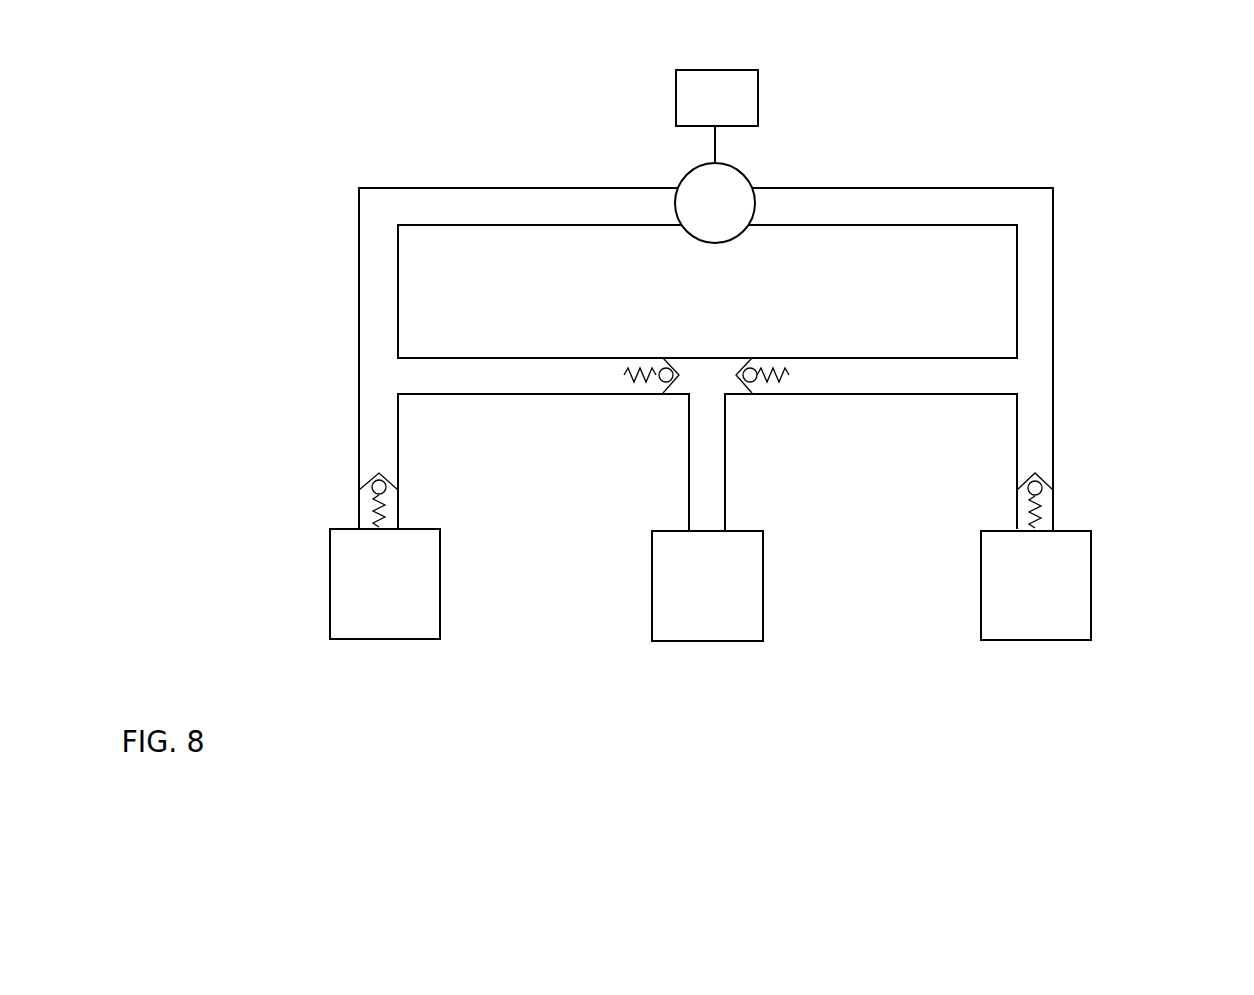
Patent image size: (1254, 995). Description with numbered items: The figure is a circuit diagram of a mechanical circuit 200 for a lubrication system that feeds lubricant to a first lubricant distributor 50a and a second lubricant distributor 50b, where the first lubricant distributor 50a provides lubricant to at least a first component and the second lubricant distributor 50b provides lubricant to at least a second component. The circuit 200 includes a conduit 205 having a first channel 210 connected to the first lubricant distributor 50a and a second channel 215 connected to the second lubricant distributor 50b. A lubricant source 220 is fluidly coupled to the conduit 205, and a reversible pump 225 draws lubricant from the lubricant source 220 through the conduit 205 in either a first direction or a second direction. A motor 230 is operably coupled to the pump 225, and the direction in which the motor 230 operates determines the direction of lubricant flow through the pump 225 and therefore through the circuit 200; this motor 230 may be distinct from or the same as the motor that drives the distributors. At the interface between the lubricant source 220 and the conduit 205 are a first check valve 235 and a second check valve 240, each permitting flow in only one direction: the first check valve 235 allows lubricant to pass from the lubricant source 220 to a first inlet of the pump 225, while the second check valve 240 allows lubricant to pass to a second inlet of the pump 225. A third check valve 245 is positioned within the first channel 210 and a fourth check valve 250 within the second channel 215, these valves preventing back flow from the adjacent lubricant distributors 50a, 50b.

The mechanical circuit 200 is at (292, 167).
The conduit 205 is at (993, 188).
The first channel 210 is at (359, 442).
The second channel 215 is at (1053, 442).
The lubricant source 220 is at (707, 586).
The reversible pump 225 is at (697, 195).
The motor 230 is at (717, 98).
The first check valve 235 is at (752, 362).
The second check valve 240 is at (672, 360).
The third check valve 245 is at (372, 499).
The fourth check valve 250 is at (1042, 499).
The first lubricant distributor 50a is at (385, 584).
The second lubricant distributor 50b is at (1036, 585).